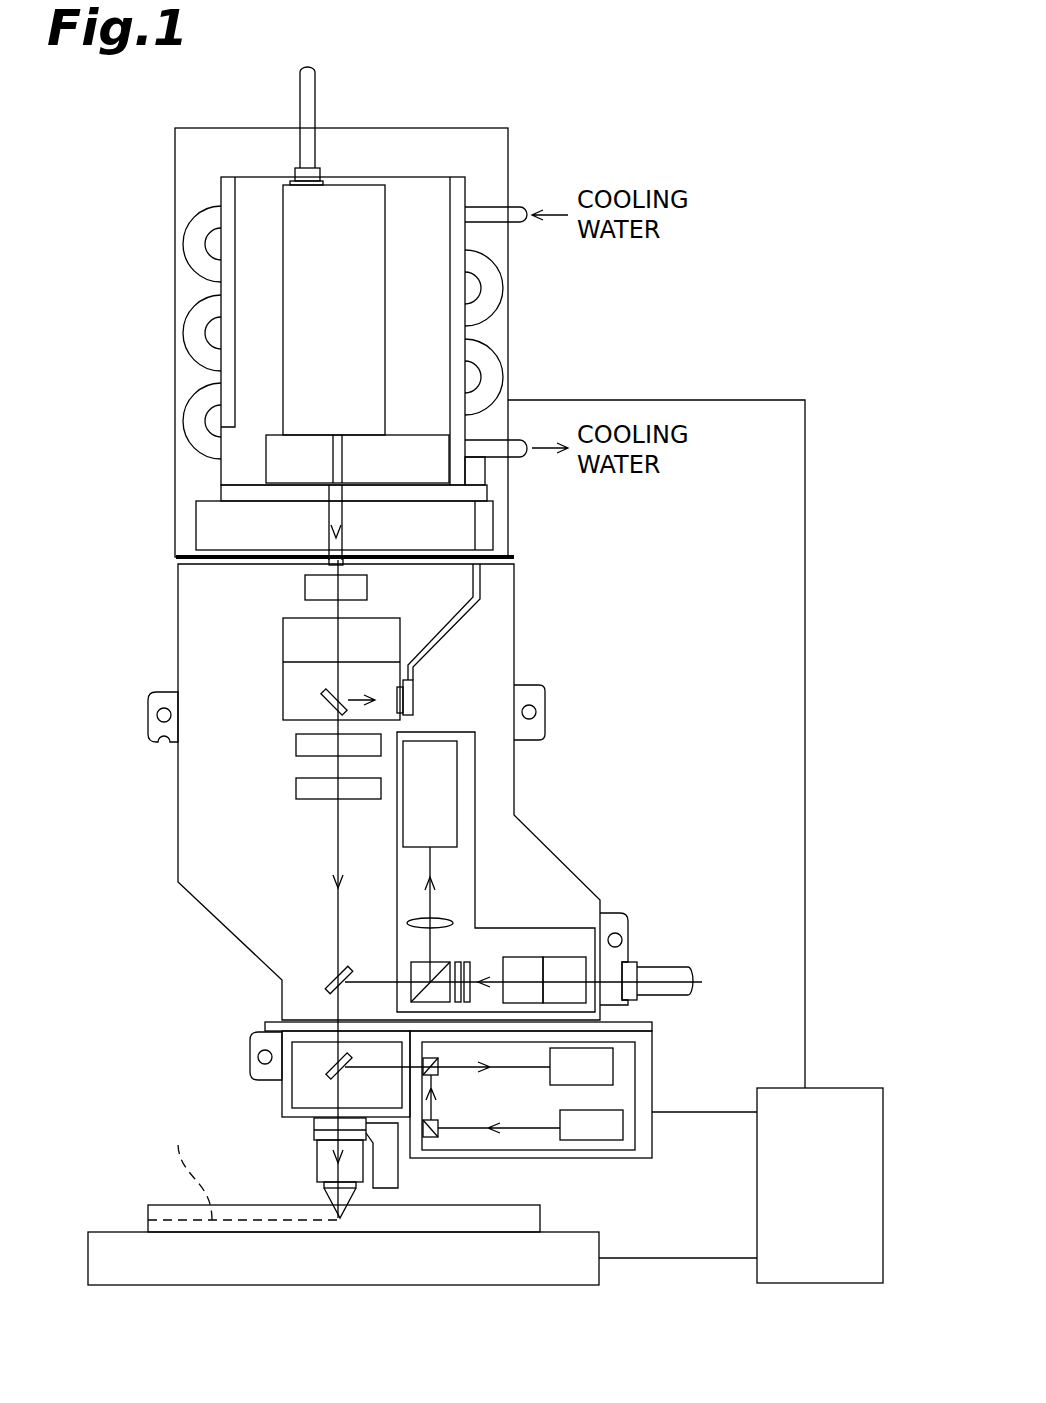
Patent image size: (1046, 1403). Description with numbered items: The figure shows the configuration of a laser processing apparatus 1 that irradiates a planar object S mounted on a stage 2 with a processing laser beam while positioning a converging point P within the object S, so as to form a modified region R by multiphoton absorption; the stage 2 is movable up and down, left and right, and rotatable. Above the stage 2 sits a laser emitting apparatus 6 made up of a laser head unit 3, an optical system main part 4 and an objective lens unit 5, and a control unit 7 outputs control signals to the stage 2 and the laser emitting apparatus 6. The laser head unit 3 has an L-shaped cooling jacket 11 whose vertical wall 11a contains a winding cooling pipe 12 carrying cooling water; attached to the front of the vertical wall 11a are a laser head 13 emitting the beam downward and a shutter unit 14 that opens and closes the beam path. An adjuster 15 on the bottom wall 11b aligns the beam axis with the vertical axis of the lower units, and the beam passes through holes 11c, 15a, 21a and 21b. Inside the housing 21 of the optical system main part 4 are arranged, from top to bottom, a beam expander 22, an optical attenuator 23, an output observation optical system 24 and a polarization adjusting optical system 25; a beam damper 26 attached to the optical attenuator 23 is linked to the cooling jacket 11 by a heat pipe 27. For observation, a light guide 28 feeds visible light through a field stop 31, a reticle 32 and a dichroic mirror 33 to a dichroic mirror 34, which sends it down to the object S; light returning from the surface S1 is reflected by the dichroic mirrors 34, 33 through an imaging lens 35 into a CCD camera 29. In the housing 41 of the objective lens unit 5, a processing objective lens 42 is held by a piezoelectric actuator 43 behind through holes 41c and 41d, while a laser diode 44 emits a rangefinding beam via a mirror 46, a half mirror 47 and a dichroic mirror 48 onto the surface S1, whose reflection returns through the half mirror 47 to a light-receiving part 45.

The laser processing apparatus 1 is at (638, 143).
The stage 2 is at (88, 1260).
The laser head unit 3 is at (510, 357).
The optical system main part 4 is at (515, 655).
The objective lens unit 5 is at (653, 1092).
The laser emitting apparatus 6 is at (176, 637).
The control unit 7 is at (842, 1088).
The cooling jacket 11 is at (212, 198).
The vertical wall 11a is at (413, 183).
The bottom wall 11b is at (212, 480).
The through hole 11c is at (340, 483).
The cooling pipe 12 is at (187, 407).
The laser head 13 is at (342, 297).
The shutter unit 14 is at (405, 460).
The adjuster 15 is at (204, 535).
The through hole 15a is at (343, 530).
The housing 21 is at (178, 848).
The through hole 21a is at (343, 562).
The through hole 21b is at (275, 1022).
The beam expander 22 is at (305, 588).
The optical attenuator 23 is at (283, 690).
The output observation optical system 24 is at (296, 745).
The polarization adjusting optical system 25 is at (296, 788).
The beam damper 26 is at (413, 690).
The heat pipe 27 is at (478, 574).
The light guide 28 is at (662, 965).
The CCD camera 29 is at (457, 790).
The field stop 31 is at (563, 957).
The reticle 32 is at (523, 957).
The dichroic mirror 33 is at (438, 962).
The dichroic mirror 34 is at (330, 975).
The imaging lens 35 is at (420, 918).
The housing 41 is at (282, 1068).
The through hole 41c is at (343, 1022).
The through hole 41d is at (345, 1112).
The processing objective lens 42 is at (317, 1160).
The actuator 43 is at (398, 1173).
The laser diode 44 is at (623, 1123).
The light-receiving part 45 is at (613, 1067).
The mirror 46 is at (440, 1130).
The half mirror 47 is at (438, 1073).
The dichroic mirror 48 is at (335, 1062).
The object S is at (148, 1213).
The surface S1 is at (178, 1205).
The modified region R is at (190, 1169).
The converging point P is at (340, 1218).